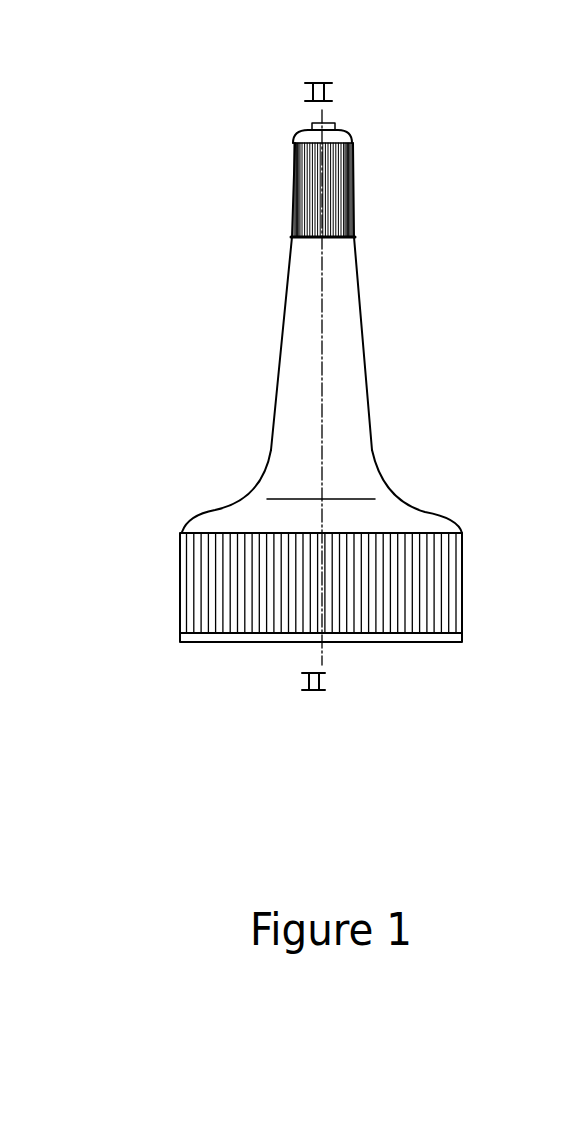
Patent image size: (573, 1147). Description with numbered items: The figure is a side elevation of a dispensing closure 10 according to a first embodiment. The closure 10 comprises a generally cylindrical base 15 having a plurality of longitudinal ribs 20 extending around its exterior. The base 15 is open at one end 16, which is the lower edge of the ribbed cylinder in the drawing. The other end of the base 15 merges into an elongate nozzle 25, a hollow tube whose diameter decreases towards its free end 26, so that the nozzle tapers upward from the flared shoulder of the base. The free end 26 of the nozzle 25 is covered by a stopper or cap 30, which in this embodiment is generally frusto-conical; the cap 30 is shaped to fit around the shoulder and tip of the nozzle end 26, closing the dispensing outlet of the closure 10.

The dispensing closure 10 is at (173, 100).
The base 15 is at (193, 520).
The open end of base 16 is at (188, 642).
The longitudinal ribs 20 is at (225, 570).
The elongate nozzle 25 is at (280, 358).
The free end of nozzle 26 is at (290, 238).
The cap 30 is at (353, 178).